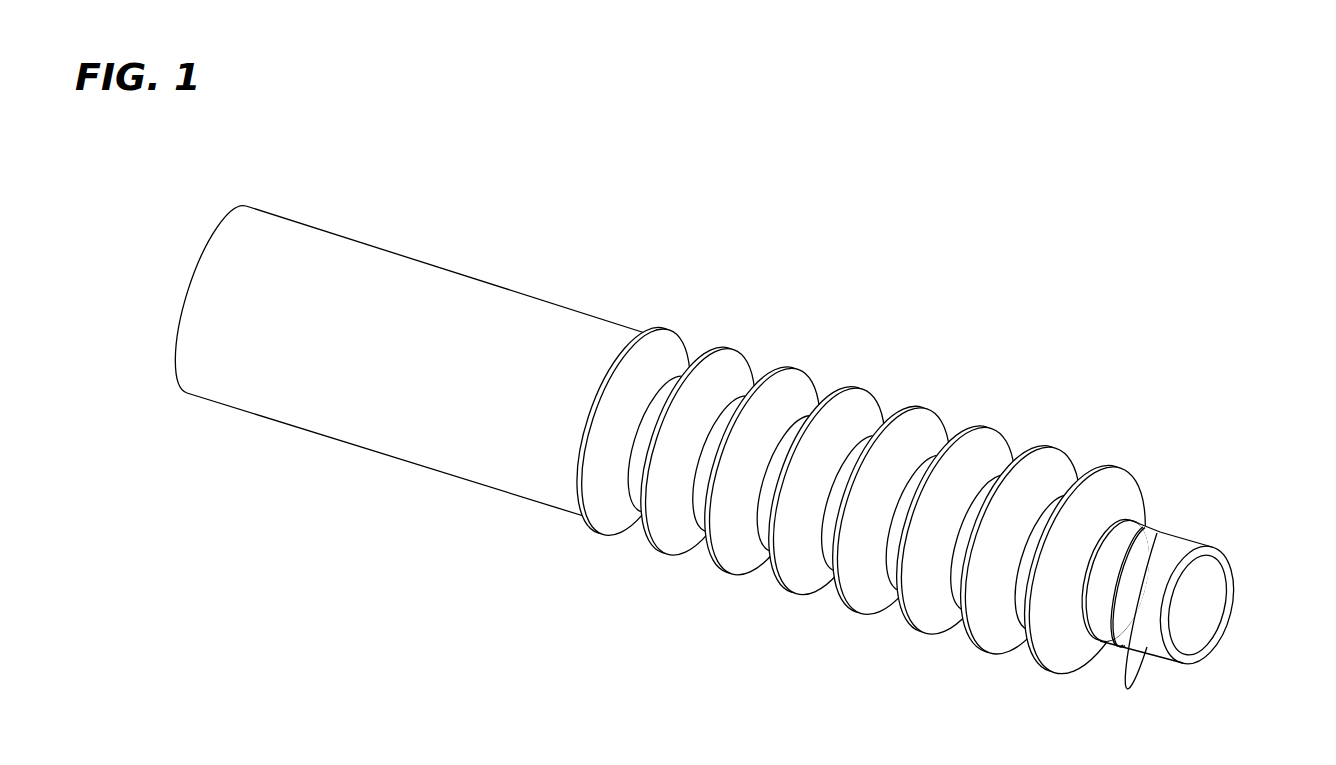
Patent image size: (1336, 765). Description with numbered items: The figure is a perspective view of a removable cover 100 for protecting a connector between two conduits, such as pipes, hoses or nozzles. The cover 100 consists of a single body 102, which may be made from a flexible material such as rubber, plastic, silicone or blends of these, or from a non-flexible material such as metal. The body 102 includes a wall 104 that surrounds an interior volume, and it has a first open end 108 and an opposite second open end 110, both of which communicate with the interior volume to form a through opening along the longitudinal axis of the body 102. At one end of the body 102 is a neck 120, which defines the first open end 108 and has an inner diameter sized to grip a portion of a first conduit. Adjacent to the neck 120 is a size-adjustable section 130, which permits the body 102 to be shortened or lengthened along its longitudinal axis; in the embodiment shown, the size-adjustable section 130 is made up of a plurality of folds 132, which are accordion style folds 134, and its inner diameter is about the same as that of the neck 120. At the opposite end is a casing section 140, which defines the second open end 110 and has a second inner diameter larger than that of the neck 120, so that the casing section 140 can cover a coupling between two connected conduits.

The cover 100 is at (945, 217).
The body 102 is at (505, 287).
The wall 104 is at (398, 255).
The first open end 108 is at (1208, 607).
The second open end 110 is at (175, 337).
The neck 120 is at (1207, 543).
The size-adjustable section 130 is at (933, 407).
The folds 132 is at (740, 348).
The accordion style folds 134 is at (827, 675).
The casing section 140 is at (298, 428).